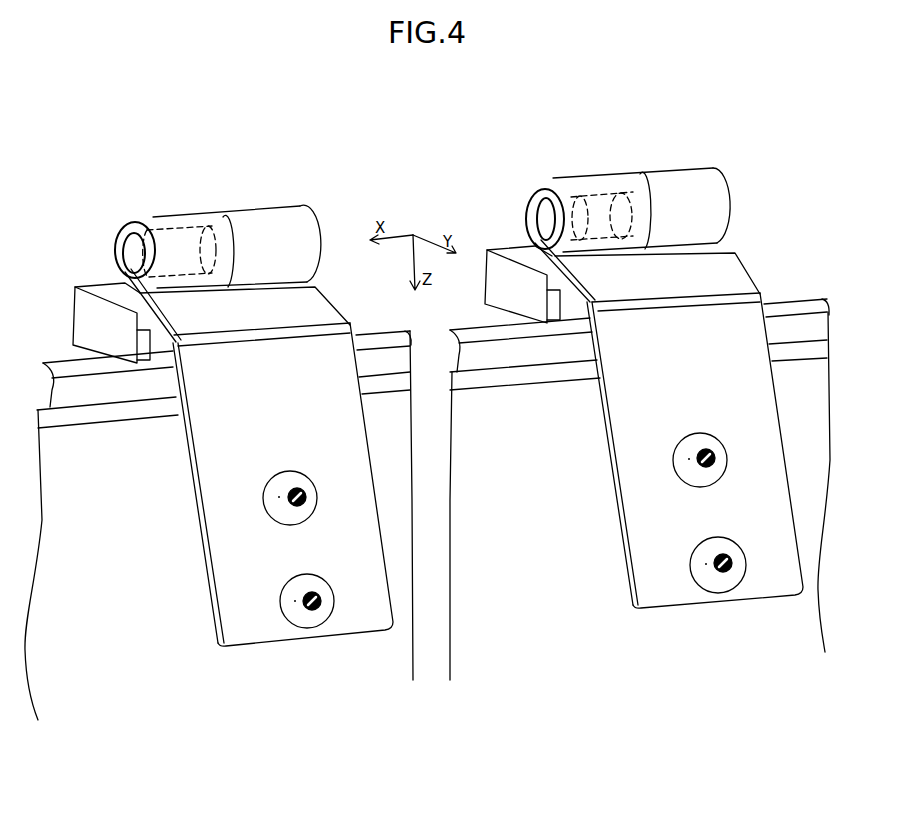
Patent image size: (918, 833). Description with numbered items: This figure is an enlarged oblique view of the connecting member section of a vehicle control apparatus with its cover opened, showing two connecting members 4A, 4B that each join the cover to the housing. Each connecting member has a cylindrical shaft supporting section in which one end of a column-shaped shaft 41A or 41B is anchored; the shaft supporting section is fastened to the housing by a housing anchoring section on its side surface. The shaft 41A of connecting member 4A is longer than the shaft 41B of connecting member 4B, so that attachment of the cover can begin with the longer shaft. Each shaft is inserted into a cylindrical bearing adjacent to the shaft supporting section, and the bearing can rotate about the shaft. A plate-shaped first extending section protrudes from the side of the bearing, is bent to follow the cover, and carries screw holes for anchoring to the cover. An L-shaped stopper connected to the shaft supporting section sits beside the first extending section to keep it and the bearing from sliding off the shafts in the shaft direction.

The connecting member 4A is at (215, 189).
The connecting member 4B is at (624, 166).
The shaft 41A is at (173, 230).
The shaft 41B is at (583, 193).